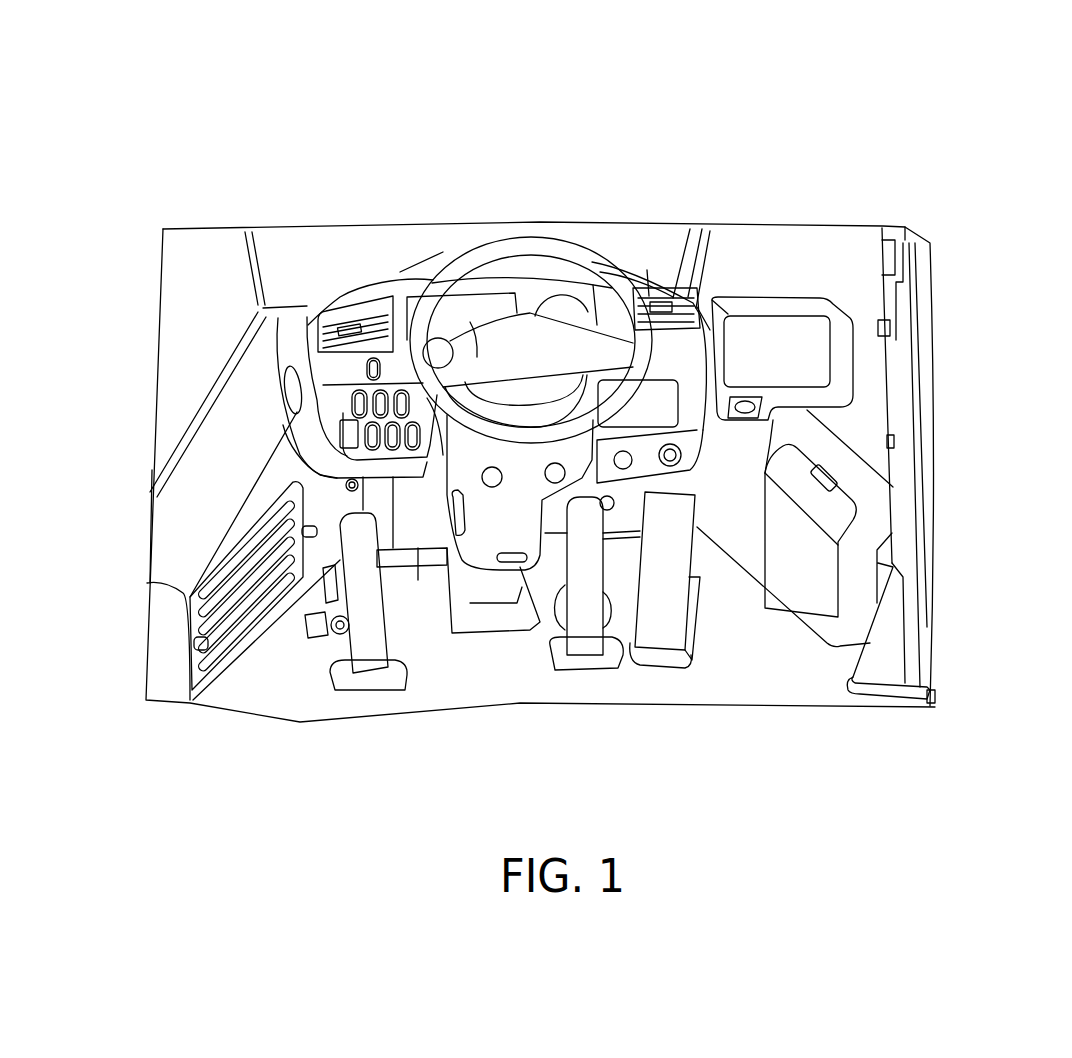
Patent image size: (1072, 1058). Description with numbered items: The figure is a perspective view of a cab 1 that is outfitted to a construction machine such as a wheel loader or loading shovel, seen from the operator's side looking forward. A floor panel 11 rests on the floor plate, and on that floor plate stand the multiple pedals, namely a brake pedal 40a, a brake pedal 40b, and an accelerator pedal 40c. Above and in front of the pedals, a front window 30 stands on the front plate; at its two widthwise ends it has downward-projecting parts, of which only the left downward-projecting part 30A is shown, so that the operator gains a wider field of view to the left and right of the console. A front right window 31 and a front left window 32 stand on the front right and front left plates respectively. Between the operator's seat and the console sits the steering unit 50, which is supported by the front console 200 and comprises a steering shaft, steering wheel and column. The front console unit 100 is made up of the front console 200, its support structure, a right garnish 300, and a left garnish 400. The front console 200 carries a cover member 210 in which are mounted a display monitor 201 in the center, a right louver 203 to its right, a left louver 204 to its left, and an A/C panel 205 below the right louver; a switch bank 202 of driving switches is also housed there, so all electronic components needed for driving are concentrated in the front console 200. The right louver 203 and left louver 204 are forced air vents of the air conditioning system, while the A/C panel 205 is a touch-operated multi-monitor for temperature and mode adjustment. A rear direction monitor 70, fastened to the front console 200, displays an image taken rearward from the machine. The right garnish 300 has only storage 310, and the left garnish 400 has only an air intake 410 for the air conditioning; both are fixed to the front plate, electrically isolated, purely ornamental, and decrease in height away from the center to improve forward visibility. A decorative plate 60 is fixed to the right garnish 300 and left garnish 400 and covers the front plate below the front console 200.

The cab 1 is at (915, 145).
The floor panel 11 is at (775, 697).
The front window 30 is at (325, 250).
The downward-projecting part 30A is at (292, 294).
The front right window 31 is at (838, 268).
The front left window 32 is at (193, 268).
The brake pedal 40a is at (360, 663).
The brake pedal 40b is at (582, 647).
The accelerator pedal 40c is at (657, 640).
The steering unit 50 is at (497, 605).
The decorative plate 60 is at (418, 580).
The rear direction monitor 70 is at (818, 362).
The front console unit 100 is at (638, 116).
The front console 200 is at (439, 258).
The display monitor 201 is at (347, 415).
The switch bank 202 is at (345, 395).
The right louver 203 is at (716, 444).
The left louver 204 is at (410, 377).
The A/C panel 205 is at (653, 417).
The cover member 210 is at (647, 270).
The right garnish 300 is at (652, 307).
The storage 310 is at (818, 647).
The left garnish 400 is at (307, 322).
The air intake 410 is at (222, 640).